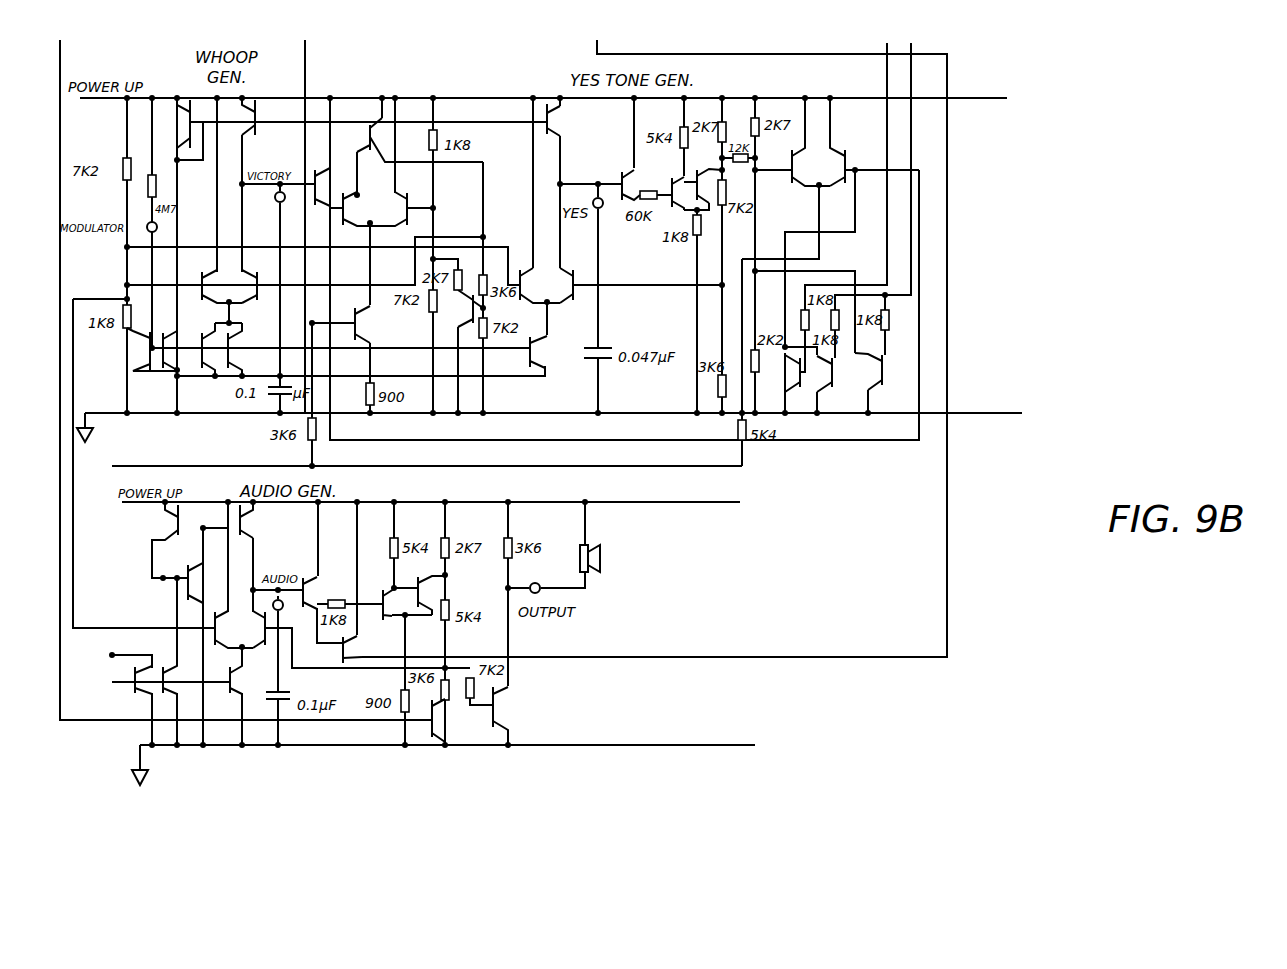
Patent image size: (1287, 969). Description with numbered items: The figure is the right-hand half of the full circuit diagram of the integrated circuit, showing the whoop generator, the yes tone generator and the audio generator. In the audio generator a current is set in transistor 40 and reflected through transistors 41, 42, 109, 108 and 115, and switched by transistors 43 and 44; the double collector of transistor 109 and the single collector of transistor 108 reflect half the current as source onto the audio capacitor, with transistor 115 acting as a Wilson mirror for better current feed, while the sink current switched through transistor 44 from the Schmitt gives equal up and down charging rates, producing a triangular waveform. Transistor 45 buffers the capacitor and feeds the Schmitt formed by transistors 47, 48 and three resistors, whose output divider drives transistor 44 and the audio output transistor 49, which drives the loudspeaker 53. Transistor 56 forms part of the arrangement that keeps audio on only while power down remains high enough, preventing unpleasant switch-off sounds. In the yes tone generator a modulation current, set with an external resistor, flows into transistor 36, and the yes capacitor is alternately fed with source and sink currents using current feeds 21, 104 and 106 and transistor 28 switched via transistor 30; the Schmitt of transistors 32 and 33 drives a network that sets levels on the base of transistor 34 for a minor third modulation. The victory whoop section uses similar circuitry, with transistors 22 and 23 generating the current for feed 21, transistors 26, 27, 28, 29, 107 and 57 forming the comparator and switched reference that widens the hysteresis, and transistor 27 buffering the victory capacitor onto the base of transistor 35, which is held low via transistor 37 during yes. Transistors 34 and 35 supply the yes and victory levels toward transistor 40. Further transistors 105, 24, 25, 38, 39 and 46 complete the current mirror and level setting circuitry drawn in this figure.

The current feed transistor 104 is at (180, 129).
The transistor 105 is at (266, 116).
The current feed transistor 106 is at (568, 120).
The comparator and switched reference transistor 107 is at (359, 135).
The single-collector current mirror transistor 108 is at (260, 520).
The double-collector current mirror transistor 109 is at (167, 540).
The Wilson mirror transistor 115 is at (207, 565).
The current feed transistor 21 is at (179, 350).
The current generating transistor 22 is at (206, 345).
The current generating transistor 23 is at (244, 349).
The transistor 24 is at (222, 286).
The transistor 25 is at (244, 286).
The comparator transistor 26 is at (371, 324).
The victory capacitor buffer transistor 27 is at (330, 187).
The switched current feed transistor 28 is at (453, 280).
The comparator transistor 29 is at (465, 247).
The switching transistor 30 is at (563, 285).
The Schmitt transistor 32 is at (679, 201).
The Schmitt transistor 33 is at (709, 186).
The yes level transistor 34 is at (811, 142).
The victory level transistor 35 is at (834, 142).
The modulation current transistor 36 is at (152, 349).
The hold-low transistor 37 is at (713, 281).
The transistor 38 is at (820, 374).
The transistor 39 is at (866, 371).
The audio generator current mirror transistor 40 is at (136, 693).
The current mirror transistor 41 is at (167, 649).
The current mirror transistor 42 is at (244, 671).
The switching transistor 43 is at (234, 629).
The sink switching transistor 44 is at (258, 629).
The buffer transistor 45 is at (321, 592).
The transistor 46 is at (358, 648).
The Schmitt transistor 47 is at (396, 604).
The Schmitt transistor 48 is at (431, 595).
The audio output transistor 49 is at (510, 716).
The loudspeaker 53 is at (601, 560).
The audio switch-off transistor 56 is at (446, 720).
The switched reference transistor 57 is at (464, 311).